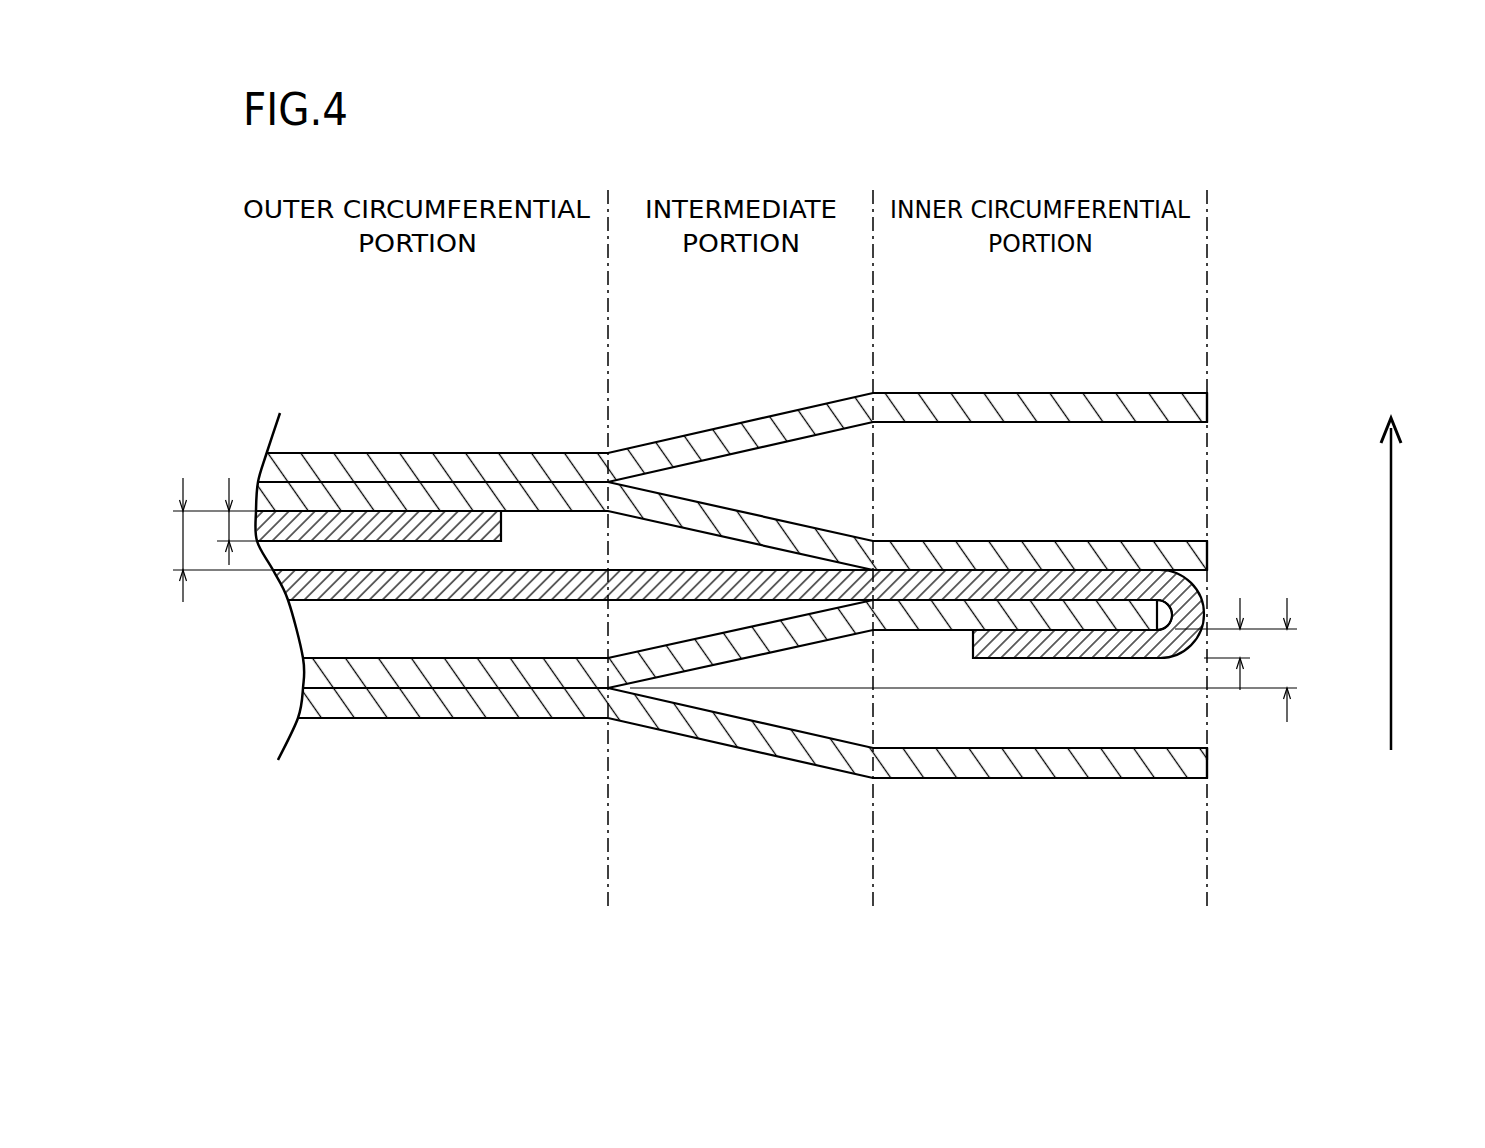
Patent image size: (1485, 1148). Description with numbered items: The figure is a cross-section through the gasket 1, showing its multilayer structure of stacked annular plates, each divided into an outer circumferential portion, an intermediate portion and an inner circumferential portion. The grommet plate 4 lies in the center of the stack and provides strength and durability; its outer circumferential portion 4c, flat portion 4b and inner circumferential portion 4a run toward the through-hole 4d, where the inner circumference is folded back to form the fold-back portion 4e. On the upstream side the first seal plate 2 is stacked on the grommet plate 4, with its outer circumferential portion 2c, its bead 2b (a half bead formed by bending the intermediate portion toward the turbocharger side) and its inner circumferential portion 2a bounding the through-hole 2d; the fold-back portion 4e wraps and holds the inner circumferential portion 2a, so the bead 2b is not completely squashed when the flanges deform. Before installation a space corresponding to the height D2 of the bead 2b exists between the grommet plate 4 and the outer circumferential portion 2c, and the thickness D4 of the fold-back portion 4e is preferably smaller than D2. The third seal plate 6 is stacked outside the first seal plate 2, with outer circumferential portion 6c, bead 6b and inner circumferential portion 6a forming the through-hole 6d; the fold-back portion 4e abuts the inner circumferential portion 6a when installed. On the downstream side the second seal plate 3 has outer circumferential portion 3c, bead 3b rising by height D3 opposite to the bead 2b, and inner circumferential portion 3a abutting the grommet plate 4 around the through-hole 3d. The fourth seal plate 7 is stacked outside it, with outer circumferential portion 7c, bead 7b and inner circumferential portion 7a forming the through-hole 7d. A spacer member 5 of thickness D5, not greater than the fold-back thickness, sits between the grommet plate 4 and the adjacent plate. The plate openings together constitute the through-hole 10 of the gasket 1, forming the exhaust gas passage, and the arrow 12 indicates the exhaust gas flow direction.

The gasket 1 is at (769, 571).
The first seal plate 2 is at (747, 670).
The inner circumferential portion of first seal plate 2a is at (893, 612).
The bead of first seal plate 2b is at (690, 645).
The outer circumferential portion of first seal plate 2c is at (440, 667).
The through-hole of first seal plate 2d is at (1170, 632).
The second seal plate 3 is at (770, 513).
The inner circumferential portion of second seal plate 3a is at (1020, 553).
The bead of second seal plate 3b is at (762, 527).
The outer circumferential portion of second seal plate 3c is at (611, 487).
The through-hole of second seal plate 3d is at (1208, 550).
The grommet plate 4 is at (778, 631).
The inner circumferential portion of grommet plate 4a is at (931, 592).
The flat portion of grommet plate 4b is at (705, 583).
The outer circumferential portion of grommet plate 4c is at (540, 583).
The through-hole of grommet plate 4d is at (1205, 613).
The fold-back portion 4e is at (1065, 660).
The spacer member 5 is at (393, 510).
The third seal plate 6 is at (791, 773).
The inner circumferential portion of third seal plate 6a is at (955, 770).
The bead of third seal plate 6b is at (750, 745).
The outer circumferential portion of third seal plate 6c is at (500, 708).
The through-hole of third seal plate 6d is at (1207, 778).
The fourth seal plate 7 is at (771, 405).
The inner circumferential portion of fourth seal plate 7a is at (987, 403).
The bead of fourth seal plate 7b is at (785, 420).
The outer circumferential portion of fourth seal plate 7c is at (498, 460).
The through-hole of fourth seal plate 7d is at (1208, 403).
The through-hole of gasket 10 is at (1207, 757).
The arrow 12 is at (1392, 591).
The height of bead of first seal plate D2 is at (1289, 658).
The height of bead of second seal plate D3 is at (183, 542).
The thickness of fold-back portion D4 is at (1242, 645).
The thickness of spacer member D5 is at (228, 532).